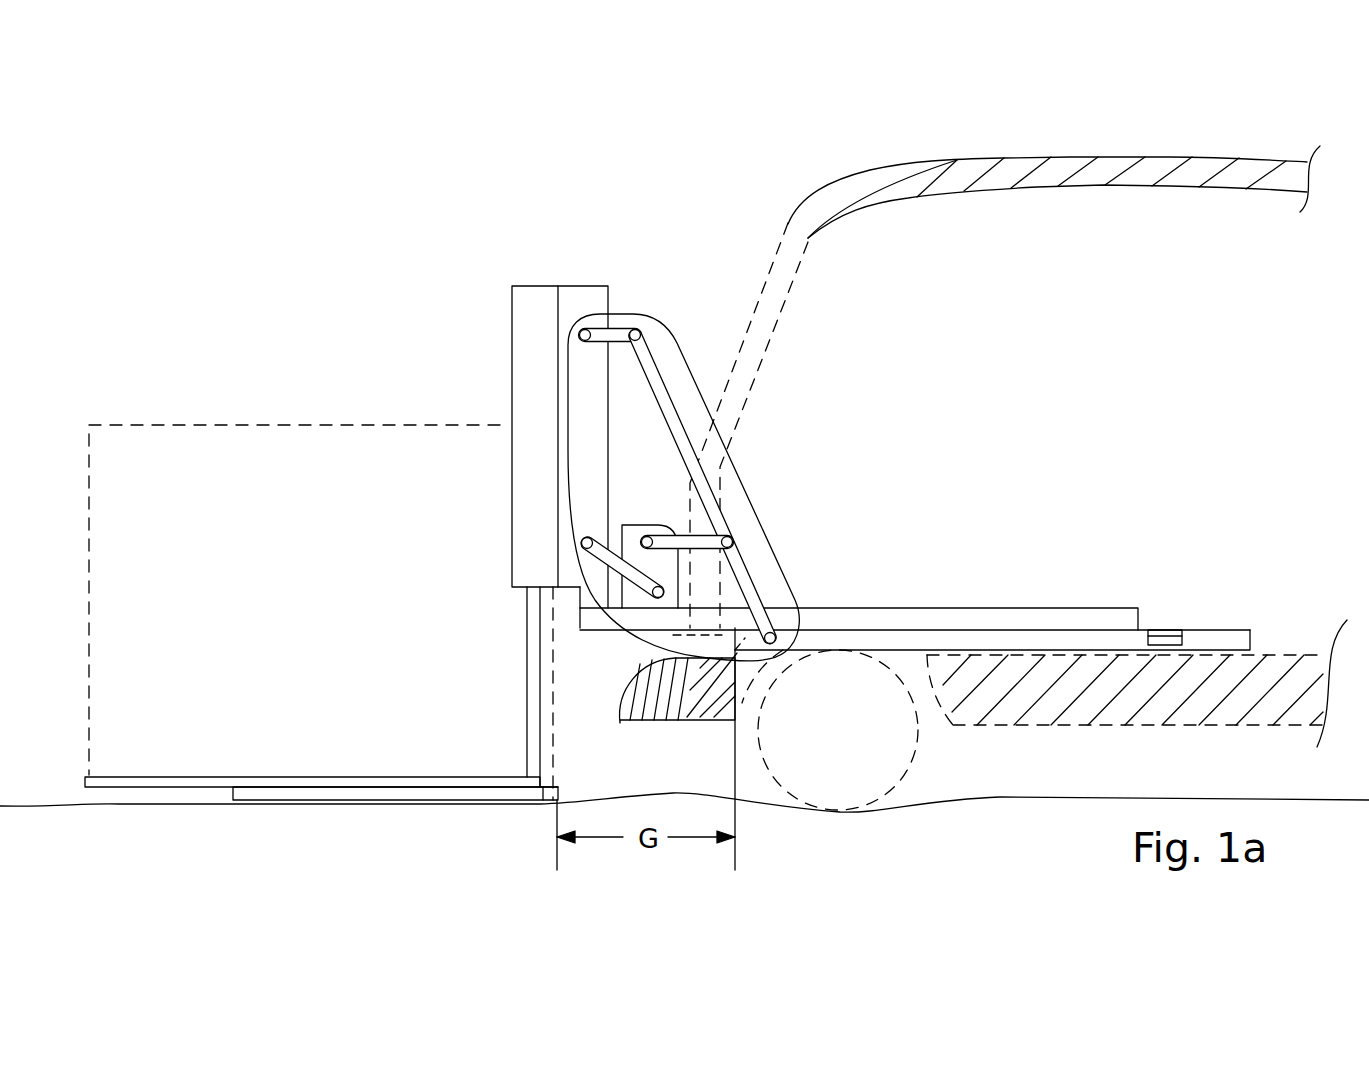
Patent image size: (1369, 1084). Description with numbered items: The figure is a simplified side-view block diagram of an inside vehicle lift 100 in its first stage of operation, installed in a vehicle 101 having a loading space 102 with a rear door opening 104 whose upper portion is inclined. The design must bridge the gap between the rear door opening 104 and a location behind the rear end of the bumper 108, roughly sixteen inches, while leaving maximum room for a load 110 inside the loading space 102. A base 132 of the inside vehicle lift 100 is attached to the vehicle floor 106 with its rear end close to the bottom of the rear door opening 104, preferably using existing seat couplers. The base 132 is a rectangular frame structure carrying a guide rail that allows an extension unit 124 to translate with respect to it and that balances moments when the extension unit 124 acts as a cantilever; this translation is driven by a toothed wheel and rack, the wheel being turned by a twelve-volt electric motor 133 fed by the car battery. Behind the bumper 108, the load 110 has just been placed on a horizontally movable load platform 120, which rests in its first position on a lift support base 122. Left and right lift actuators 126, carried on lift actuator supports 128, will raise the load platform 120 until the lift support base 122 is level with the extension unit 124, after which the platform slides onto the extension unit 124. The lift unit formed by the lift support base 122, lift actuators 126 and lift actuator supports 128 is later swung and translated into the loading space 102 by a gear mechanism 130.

The inside vehicle lift 100 is at (376, 280).
The vehicle 101 is at (1017, 162).
The loading space 102 is at (1079, 271).
The rear door opening 104 is at (781, 323).
The vehicle floor 106 is at (1270, 655).
The bumper 108 is at (650, 715).
The load 110 is at (203, 425).
The load platform 120 is at (156, 788).
The lift support base 122 is at (347, 802).
The extension unit 124 is at (915, 608).
The lift actuators 126 is at (510, 348).
The lift actuator supports 128 is at (580, 286).
The gear mechanism 130 is at (752, 500).
The base 132 is at (1213, 630).
The electric motor 133 is at (1190, 630).